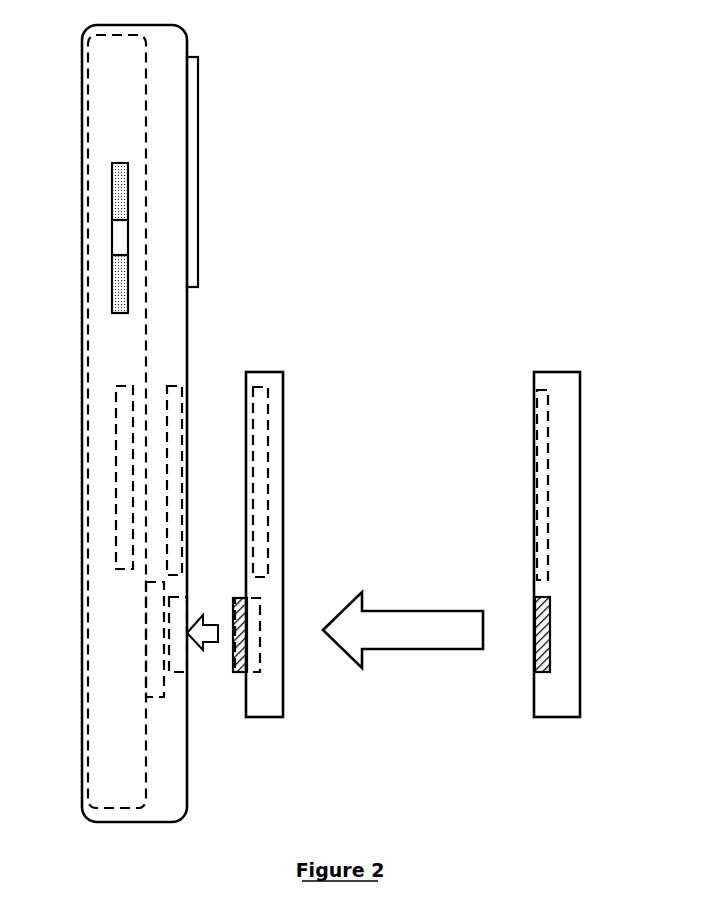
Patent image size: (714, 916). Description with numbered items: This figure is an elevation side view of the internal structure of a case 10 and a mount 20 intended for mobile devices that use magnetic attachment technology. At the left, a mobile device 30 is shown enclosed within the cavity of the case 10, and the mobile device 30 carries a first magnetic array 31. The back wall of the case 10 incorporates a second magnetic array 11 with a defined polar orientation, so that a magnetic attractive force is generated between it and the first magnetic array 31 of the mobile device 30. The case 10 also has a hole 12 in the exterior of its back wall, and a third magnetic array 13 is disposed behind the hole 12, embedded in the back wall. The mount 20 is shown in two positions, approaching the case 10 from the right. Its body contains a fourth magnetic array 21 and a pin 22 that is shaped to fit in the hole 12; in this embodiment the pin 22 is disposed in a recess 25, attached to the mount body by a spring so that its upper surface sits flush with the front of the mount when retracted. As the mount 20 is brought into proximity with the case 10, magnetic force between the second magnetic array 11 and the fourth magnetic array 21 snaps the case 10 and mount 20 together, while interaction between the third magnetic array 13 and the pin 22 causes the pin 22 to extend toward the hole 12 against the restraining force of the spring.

The case 10 is at (216, 245).
The mobile device 30 is at (108, 106).
The first magnetic array 31 is at (128, 455).
The second magnetic array 11 is at (181, 407).
The hole 12 is at (177, 658).
The third magnetic array 13 is at (158, 687).
The mount 20 is at (283, 413).
The fourth magnetic array 21 is at (260, 412).
The pin 22 is at (245, 670).
The recess 25 is at (250, 618).